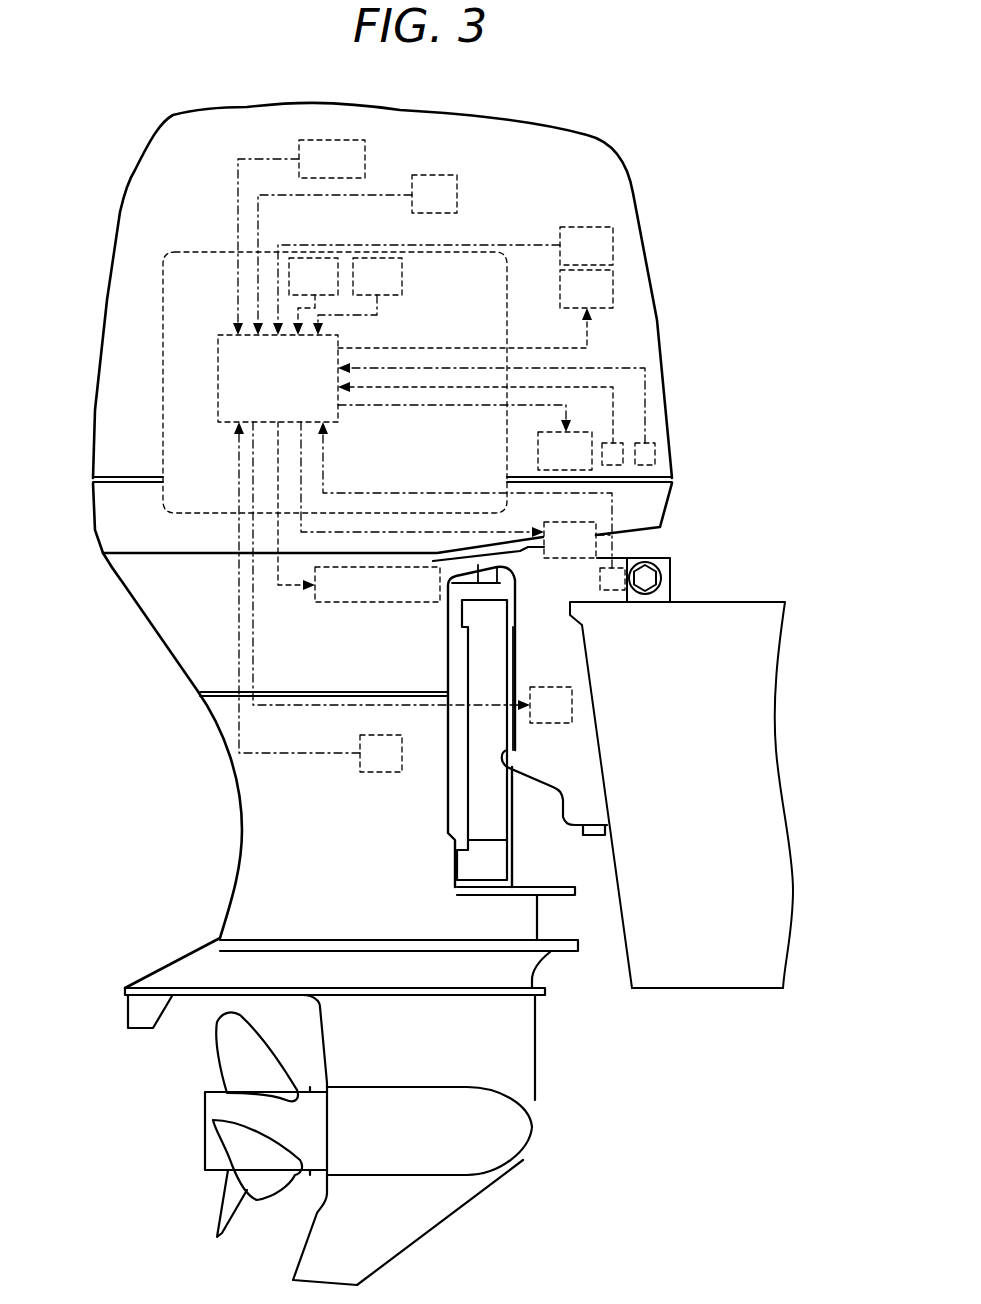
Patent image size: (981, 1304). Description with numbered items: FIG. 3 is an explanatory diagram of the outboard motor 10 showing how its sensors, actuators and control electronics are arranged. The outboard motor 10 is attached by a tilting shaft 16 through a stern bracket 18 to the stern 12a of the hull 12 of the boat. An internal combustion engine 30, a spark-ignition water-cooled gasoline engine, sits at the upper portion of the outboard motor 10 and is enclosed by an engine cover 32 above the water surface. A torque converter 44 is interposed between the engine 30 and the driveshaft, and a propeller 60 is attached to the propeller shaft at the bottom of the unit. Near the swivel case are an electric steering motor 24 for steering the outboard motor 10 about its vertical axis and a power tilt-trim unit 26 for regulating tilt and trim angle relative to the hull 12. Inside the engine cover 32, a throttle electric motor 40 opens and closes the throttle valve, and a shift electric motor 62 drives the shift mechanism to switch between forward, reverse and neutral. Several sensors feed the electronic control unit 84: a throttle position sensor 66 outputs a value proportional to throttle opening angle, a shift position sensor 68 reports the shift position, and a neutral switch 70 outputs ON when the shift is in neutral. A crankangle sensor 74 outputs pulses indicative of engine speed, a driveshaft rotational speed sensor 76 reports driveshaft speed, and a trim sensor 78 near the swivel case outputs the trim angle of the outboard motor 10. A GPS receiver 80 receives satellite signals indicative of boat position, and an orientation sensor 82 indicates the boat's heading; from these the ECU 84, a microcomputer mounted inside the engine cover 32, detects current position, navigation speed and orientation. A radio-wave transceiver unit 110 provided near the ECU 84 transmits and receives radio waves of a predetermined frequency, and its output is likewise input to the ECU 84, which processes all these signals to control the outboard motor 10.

The outboard motor 10 is at (630, 138).
The hull 12 is at (675, 992).
The stern 12a is at (645, 970).
The tilting shaft 16 is at (650, 578).
The stern bracket 18 is at (583, 787).
The electric steering motor 24 is at (456, 490).
The power tilt-trim unit 26 is at (572, 700).
The internal combustion engine 30 is at (163, 297).
The engine cover 32 is at (120, 212).
The throttle electric motor 40 is at (475, 309).
The torque converter 44 is at (375, 602).
The propeller 60 is at (223, 1205).
The shift electric motor 62 is at (465, 437).
The throttle position sensor 66 is at (443, 281).
The shift position sensor 68 is at (613, 465).
The neutral switch 70 is at (655, 447).
The crankangle sensor 74 is at (457, 185).
The driveshaft rotational speed sensor 76 is at (383, 772).
The trim sensor 78 is at (625, 568).
The GPS receiver 80 is at (313, 296).
The orientation sensor 82 is at (357, 296).
The electronic control unit 84 is at (218, 380).
The radio-wave transceiver unit 110 is at (299, 237).